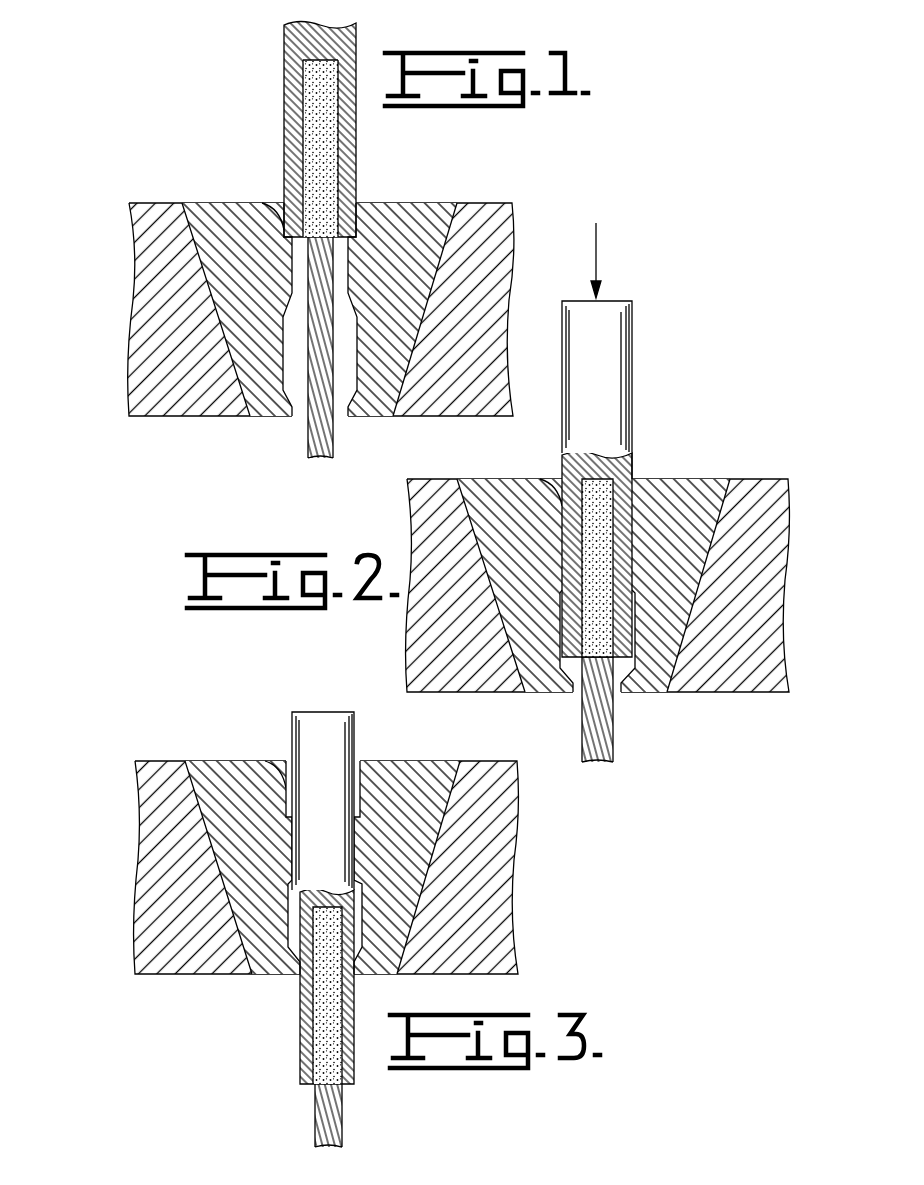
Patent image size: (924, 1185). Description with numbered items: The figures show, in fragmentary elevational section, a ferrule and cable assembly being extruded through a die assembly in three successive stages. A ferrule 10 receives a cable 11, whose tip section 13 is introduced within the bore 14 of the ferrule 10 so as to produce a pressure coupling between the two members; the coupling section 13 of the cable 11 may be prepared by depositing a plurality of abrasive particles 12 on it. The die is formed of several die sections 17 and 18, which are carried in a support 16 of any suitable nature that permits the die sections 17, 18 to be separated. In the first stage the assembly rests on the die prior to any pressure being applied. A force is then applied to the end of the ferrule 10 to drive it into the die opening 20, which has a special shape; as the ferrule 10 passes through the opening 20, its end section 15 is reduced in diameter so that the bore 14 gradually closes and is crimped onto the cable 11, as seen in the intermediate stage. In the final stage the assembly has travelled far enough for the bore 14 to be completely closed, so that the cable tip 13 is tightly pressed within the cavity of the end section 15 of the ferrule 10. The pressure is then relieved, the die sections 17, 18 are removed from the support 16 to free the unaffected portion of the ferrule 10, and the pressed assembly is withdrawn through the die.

In FIG. 2, the ferrule 10 is at (623, 400).
In FIG. 3, the ferrule 10 is at (292, 722).
In FIG. 1, the cable 11 is at (327, 447).
In FIG. 2, the cable 11 is at (603, 735).
In FIG. 3, the cable 11 is at (325, 1103).
In FIG. 1, the abrasive particles 12 is at (303, 150).
In FIG. 1, the tip section 13 is at (338, 153).
In FIG. 2, the tip section 13 is at (580, 485).
In FIG. 3, the tip section 13 is at (315, 1020).
In FIG. 1, the bore 14 is at (303, 72).
In FIG. 2, the bore 14 is at (635, 477).
In FIG. 1, the end section 15 is at (284, 105).
In FIG. 2, the end section 15 is at (597, 555).
In FIG. 3, the end section 15 is at (300, 985).
In FIG. 1, the support 16 is at (155, 203).
In FIG. 2, the support 16 is at (425, 484).
In FIG. 3, the support 16 is at (163, 772).
In FIG. 1, the die section 17 is at (413, 203).
In FIG. 2, the die section 17 is at (702, 484).
In FIG. 3, the die section 17 is at (413, 766).
In FIG. 1, the die section 18 is at (217, 203).
In FIG. 2, the die section 18 is at (493, 484).
In FIG. 3, the die section 18 is at (220, 766).
In FIG. 1, the die opening 20 is at (293, 362).